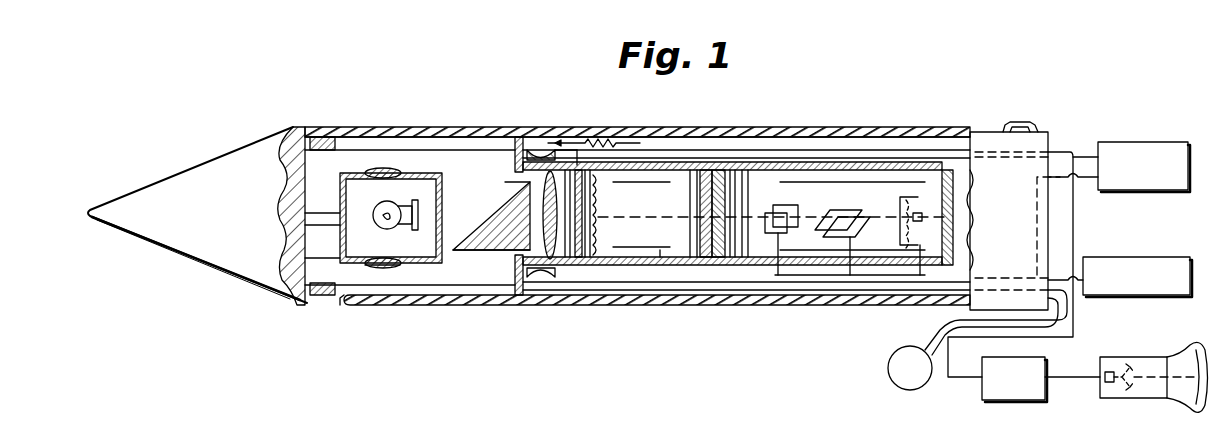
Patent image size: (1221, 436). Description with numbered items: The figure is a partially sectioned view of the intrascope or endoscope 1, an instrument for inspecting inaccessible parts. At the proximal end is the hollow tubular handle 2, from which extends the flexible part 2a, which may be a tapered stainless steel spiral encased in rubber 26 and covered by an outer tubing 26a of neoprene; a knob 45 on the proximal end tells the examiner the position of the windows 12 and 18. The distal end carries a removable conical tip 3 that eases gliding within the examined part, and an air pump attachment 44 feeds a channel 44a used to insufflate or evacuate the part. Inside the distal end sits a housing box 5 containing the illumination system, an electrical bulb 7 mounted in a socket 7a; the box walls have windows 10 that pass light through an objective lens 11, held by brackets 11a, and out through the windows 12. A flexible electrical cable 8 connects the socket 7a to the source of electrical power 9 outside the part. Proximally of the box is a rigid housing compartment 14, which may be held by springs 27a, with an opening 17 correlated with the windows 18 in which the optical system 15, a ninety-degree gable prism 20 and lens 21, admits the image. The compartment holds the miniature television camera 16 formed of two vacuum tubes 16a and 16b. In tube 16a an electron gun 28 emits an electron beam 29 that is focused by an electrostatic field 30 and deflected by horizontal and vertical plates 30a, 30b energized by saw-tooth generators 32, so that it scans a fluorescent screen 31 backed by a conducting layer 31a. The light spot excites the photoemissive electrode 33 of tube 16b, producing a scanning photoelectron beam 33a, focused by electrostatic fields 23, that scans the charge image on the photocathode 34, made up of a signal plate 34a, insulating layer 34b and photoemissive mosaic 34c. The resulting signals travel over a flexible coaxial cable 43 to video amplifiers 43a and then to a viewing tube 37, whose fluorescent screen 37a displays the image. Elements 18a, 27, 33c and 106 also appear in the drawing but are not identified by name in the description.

The intrascope 1 is at (610, 140).
The handle 2 is at (972, 130).
The flexible part 2a is at (556, 135).
The tip 3 is at (202, 172).
The housing box 5 is at (428, 173).
The electrical bulb 7 is at (376, 210).
The socket 7a is at (418, 220).
The flexible electrical cable 8 is at (507, 137).
The source of electrical power 9 is at (1132, 192).
The windows 10 is at (378, 170).
The objective lens 11 is at (380, 262).
The brackets 11a is at (352, 262).
The windows 12 is at (380, 128).
The housing compartment 14 is at (858, 168).
The optical system 15 is at (525, 182).
The television camera 16 is at (680, 214).
The vacuum tube 16a is at (808, 240).
The vacuum tube 16b is at (660, 258).
The opening 17 is at (548, 222).
The windows 18 is at (488, 308).
The sheath 18a is at (500, 132).
The gable prism 20 is at (505, 210).
The lens 21 is at (505, 252).
The electrostatic focusing field 23 is at (622, 242).
The rubber 26 is at (735, 165).
The outer tubing 26a is at (676, 136).
The bracket 27 is at (520, 158).
The springs 27a is at (532, 282).
The electron gun 28 is at (946, 195).
The electron beam 29 is at (896, 218).
The electrostatic field 30 is at (855, 238).
The horizontal deflection plates 30a is at (800, 195).
The vertical deflection plates 30b is at (838, 212).
The fluorescent screen 31 is at (742, 172).
The conducting backing layer 31a is at (748, 190).
The saw-tooth generators 32 is at (1150, 257).
The photoemissive electrode 33 is at (700, 262).
The scanning beam of photoelectrons 33a is at (641, 194).
The plate 33c is at (715, 262).
The photocathode 34 is at (578, 258).
The signal plate 34a is at (567, 258).
The insulating layer 34b is at (588, 258).
The photoemissive mosaic 34c is at (598, 255).
The viewing tube 37 is at (1124, 398).
The fluorescent screen 37a is at (1198, 405).
The flexible coaxial cable 43 is at (640, 140).
The video amplifiers 43a is at (1030, 358).
The air pump attachment 44 is at (896, 386).
The channel 44a is at (375, 305).
The knob 45 is at (1020, 121).
The connector 106 is at (975, 180).